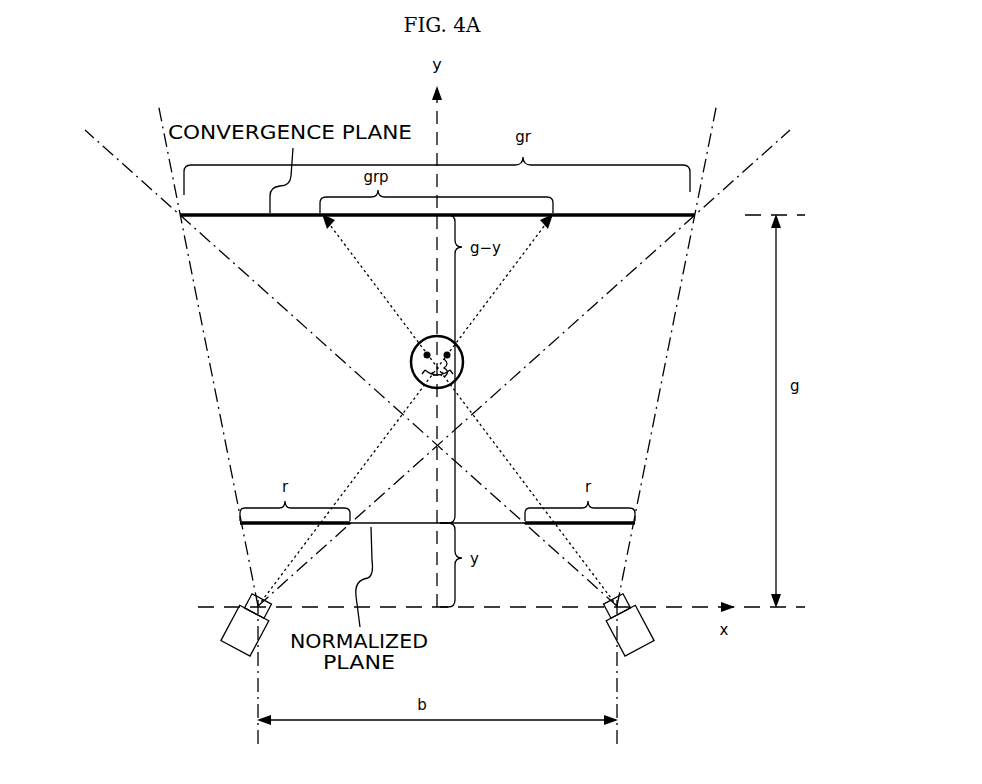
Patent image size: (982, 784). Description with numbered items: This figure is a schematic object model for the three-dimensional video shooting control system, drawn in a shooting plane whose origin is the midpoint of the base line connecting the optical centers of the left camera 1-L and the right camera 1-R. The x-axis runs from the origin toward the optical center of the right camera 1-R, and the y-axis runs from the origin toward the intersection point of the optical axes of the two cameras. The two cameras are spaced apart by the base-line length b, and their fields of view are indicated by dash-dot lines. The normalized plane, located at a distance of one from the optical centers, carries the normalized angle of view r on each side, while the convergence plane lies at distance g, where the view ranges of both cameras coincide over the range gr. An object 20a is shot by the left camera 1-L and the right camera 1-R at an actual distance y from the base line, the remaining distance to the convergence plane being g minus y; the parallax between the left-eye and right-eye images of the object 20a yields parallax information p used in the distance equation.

The object 20a is at (413, 378).
The left camera 1-L is at (238, 650).
The right camera 1-R is at (733, 683).